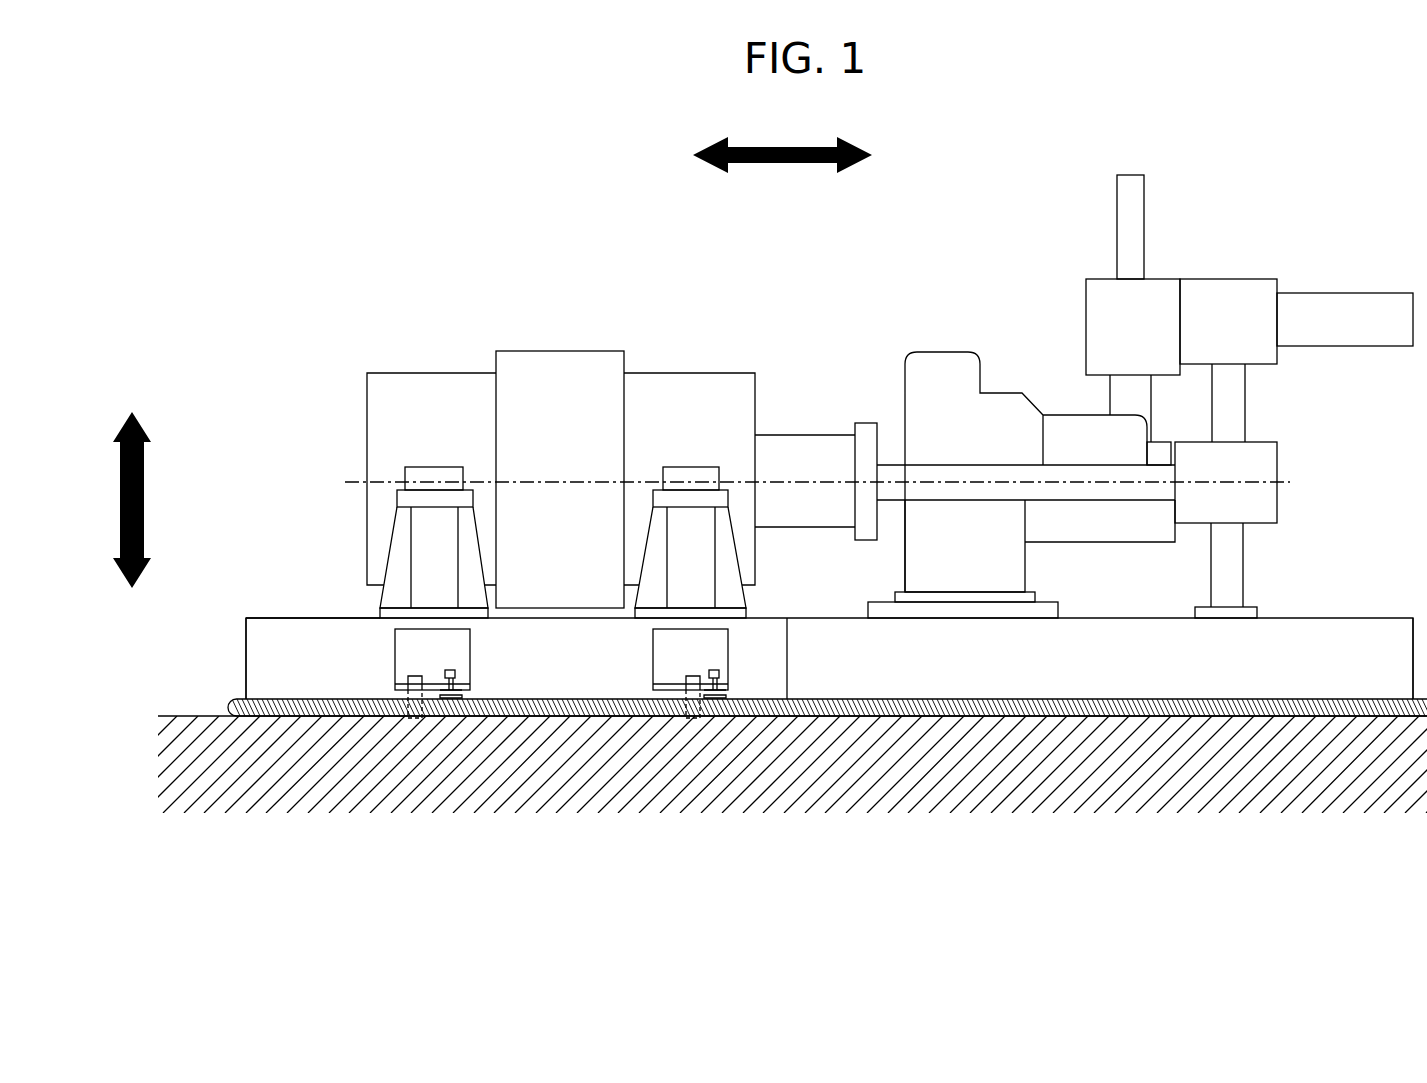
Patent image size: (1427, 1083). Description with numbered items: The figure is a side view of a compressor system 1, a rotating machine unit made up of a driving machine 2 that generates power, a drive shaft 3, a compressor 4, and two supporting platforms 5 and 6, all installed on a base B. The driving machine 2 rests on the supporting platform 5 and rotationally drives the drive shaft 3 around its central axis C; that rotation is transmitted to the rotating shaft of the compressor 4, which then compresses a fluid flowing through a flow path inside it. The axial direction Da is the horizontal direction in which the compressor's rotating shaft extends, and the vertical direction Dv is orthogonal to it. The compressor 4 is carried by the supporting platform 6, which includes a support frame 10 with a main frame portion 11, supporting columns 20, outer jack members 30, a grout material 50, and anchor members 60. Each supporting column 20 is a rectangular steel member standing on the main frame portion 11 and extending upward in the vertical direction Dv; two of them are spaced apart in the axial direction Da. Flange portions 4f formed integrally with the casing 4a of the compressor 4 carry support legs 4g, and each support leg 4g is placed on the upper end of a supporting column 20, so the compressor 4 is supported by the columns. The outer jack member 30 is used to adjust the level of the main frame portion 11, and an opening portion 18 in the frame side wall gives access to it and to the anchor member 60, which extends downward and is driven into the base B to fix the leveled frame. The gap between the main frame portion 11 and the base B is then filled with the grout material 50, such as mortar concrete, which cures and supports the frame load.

The compressor system 1 is at (902, 318).
The driving machine 2 is at (1008, 393).
The drive shaft 3 is at (893, 465).
The compressor 4 is at (552, 431).
The casing 4a is at (388, 373).
The flange portion 4f is at (427, 467).
The support leg 4g is at (680, 467).
The supporting platform 5 is at (1342, 618).
The supporting platform 6 is at (338, 605).
The support frame 10 is at (267, 618).
The main frame portion 11 is at (246, 658).
The opening portion 18 is at (395, 652).
The supporting column 20 is at (408, 538).
The outer jack member 30 is at (448, 672).
The grout material 50 is at (577, 716).
The anchor member 60 is at (422, 678).
The base B is at (172, 716).
The central axis C is at (1290, 482).
The axial direction Da is at (782, 140).
The vertical direction Dv is at (115, 500).